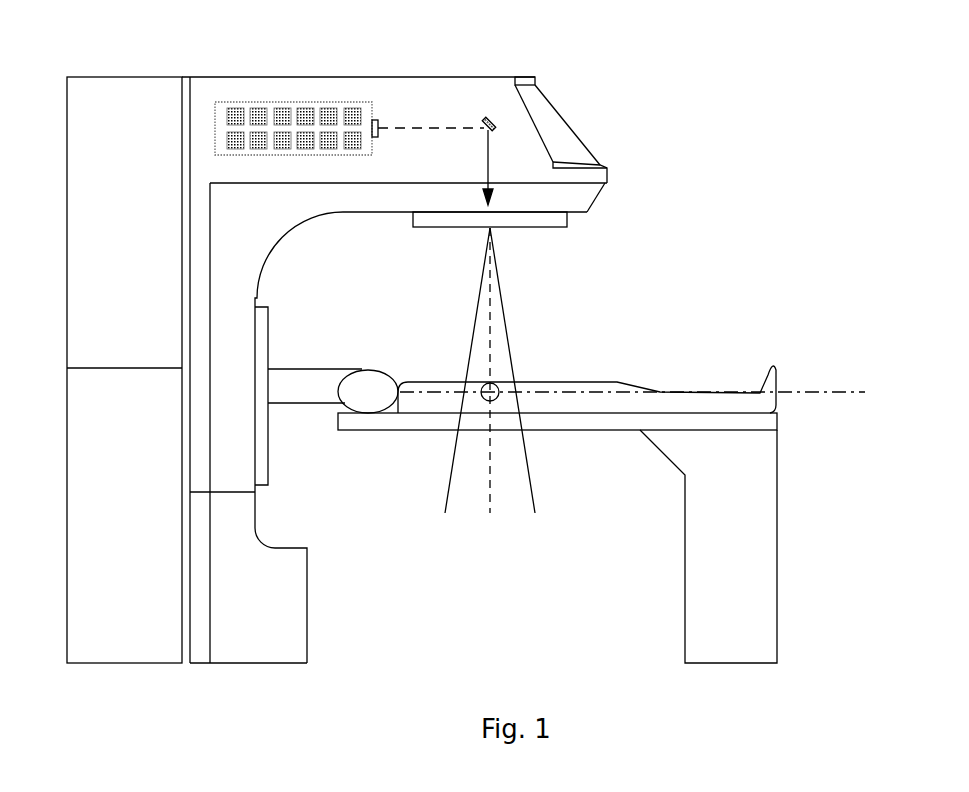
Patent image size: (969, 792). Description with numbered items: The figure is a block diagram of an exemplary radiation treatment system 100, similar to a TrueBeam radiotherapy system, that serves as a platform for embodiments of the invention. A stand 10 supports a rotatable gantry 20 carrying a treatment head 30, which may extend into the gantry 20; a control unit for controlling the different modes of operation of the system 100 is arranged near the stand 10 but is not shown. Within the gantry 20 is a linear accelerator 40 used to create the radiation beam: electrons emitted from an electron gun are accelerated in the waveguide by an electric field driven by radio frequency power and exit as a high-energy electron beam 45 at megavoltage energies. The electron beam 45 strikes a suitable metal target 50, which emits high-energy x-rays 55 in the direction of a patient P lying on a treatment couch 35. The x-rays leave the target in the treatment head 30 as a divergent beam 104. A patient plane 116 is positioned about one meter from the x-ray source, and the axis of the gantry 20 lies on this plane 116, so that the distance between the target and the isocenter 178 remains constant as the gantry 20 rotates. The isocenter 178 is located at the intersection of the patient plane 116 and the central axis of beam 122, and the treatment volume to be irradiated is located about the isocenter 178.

The radiation treatment system 100 is at (497, 21).
The stand 10 is at (106, 91).
The gantry 20 is at (587, 192).
The treatment head 30 is at (535, 215).
The treatment couch 35 is at (595, 420).
The linear accelerator 40 is at (290, 100).
The electron beam 45 is at (433, 125).
The metal target 50 is at (493, 118).
The x-rays 55 is at (490, 148).
The divergent beam 104 is at (482, 276).
The patient plane 116 is at (817, 393).
The central axis of beam 122 is at (493, 514).
The isocenter 178 is at (482, 400).
The patient P is at (660, 392).